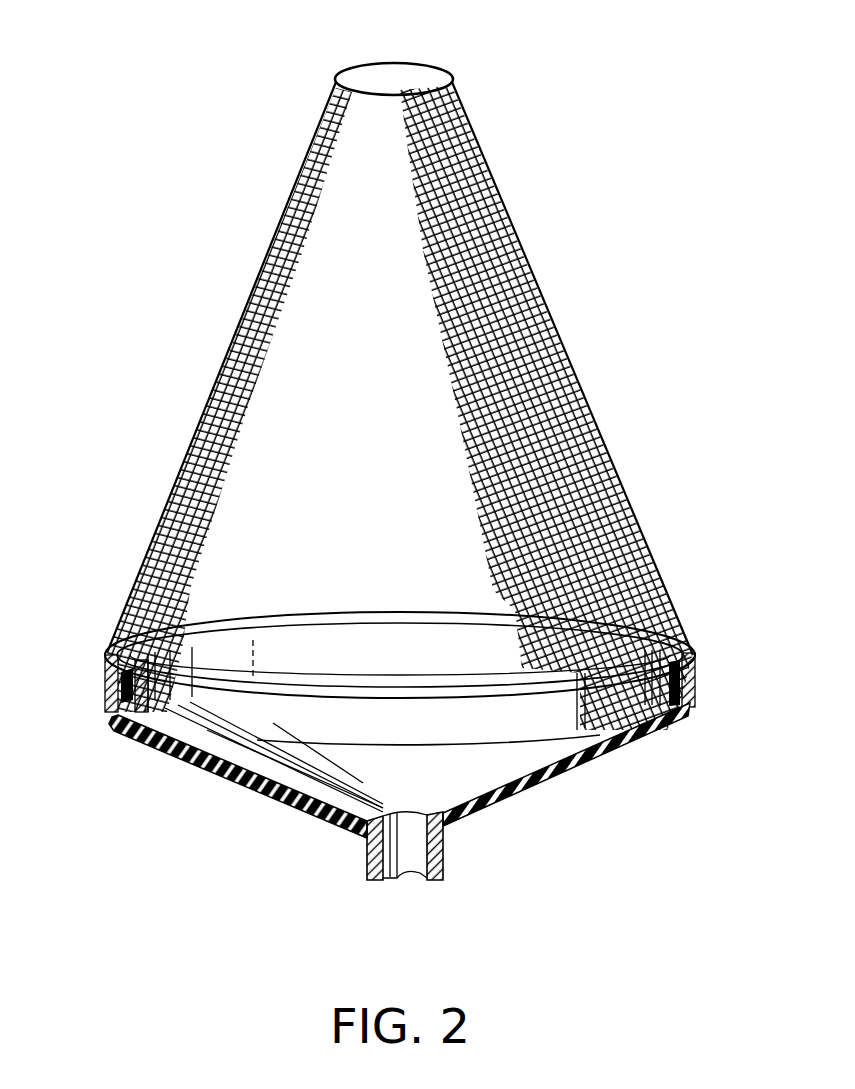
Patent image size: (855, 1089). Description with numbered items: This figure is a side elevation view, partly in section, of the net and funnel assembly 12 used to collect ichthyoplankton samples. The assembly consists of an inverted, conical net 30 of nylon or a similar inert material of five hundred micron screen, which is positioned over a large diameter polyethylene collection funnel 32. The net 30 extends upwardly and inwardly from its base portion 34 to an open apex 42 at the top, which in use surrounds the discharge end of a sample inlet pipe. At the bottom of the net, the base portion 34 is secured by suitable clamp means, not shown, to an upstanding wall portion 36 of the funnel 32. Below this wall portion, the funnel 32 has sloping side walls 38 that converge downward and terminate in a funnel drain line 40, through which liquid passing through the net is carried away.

The net and funnel assembly 12 is at (588, 133).
The inverted conical net 30 is at (572, 330).
The open apex 42 is at (433, 82).
The base portion 34 is at (105, 682).
The upstanding wall portion 36 is at (106, 701).
The collection funnel 32 is at (277, 813).
The sloping side walls 38 is at (222, 769).
The funnel drain line 40 is at (367, 857).